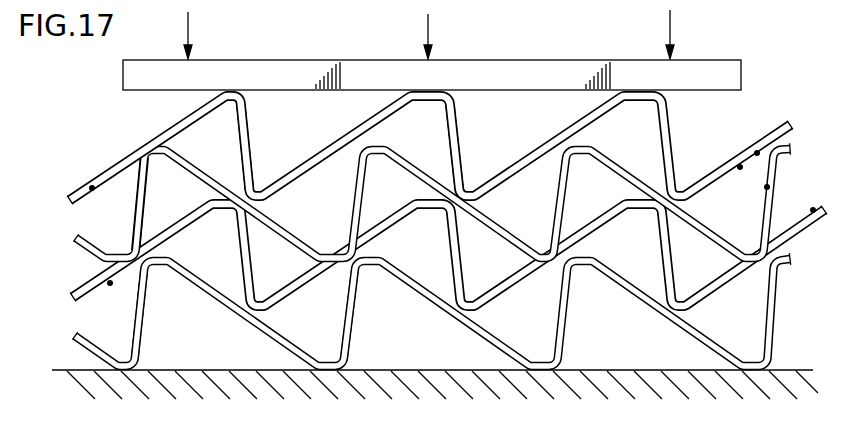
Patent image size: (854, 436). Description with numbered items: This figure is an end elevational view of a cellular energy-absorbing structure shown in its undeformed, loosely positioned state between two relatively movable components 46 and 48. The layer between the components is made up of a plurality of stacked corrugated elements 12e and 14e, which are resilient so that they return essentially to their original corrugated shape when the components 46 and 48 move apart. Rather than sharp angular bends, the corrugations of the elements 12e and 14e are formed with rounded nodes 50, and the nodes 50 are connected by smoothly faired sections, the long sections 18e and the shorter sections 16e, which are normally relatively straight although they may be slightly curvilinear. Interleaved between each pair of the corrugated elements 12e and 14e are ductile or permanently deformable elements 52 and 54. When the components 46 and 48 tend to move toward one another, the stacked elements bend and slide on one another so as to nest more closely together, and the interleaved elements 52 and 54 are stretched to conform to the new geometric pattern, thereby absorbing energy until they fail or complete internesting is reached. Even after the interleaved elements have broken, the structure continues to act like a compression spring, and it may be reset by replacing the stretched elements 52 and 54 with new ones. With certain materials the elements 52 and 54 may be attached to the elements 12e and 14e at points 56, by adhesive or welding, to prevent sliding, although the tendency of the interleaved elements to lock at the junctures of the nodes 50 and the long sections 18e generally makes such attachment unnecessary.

The corrugated element 12e is at (192, 227).
The corrugated element 14e is at (134, 222).
The section of corrugated element 16e is at (249, 148).
The long section 18e is at (232, 313).
The relatively movable component 46 is at (503, 58).
The relatively movable component 48 is at (440, 386).
The rounded node 50 is at (222, 93).
The permanently deformable element 52 is at (213, 171).
The permanently deformable element 54 is at (174, 226).
The attachment point 56 is at (88, 187).